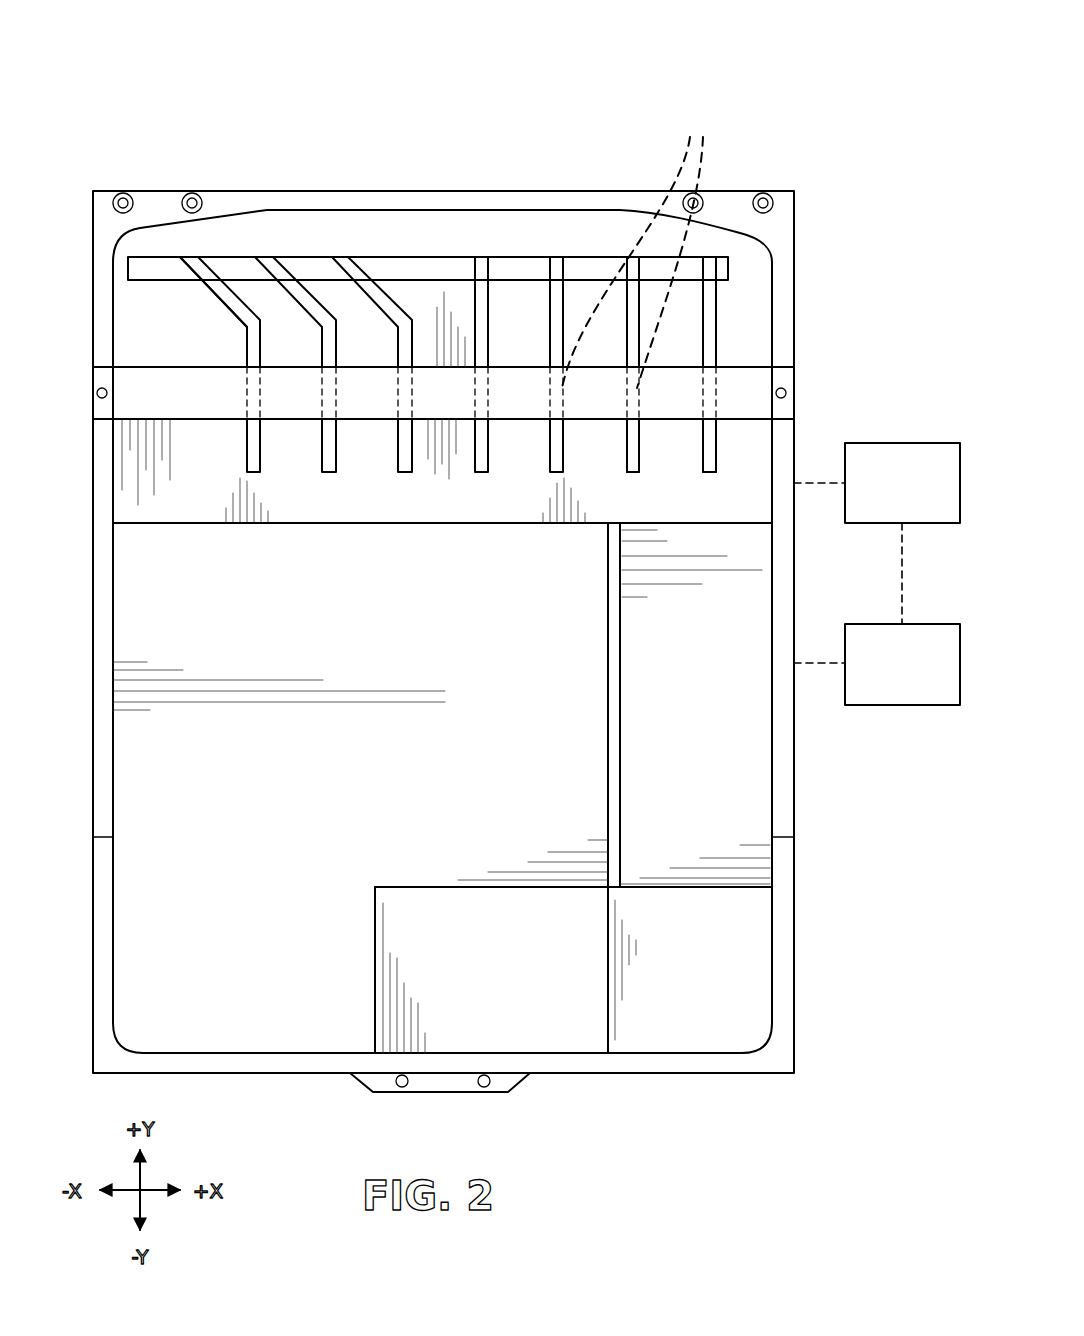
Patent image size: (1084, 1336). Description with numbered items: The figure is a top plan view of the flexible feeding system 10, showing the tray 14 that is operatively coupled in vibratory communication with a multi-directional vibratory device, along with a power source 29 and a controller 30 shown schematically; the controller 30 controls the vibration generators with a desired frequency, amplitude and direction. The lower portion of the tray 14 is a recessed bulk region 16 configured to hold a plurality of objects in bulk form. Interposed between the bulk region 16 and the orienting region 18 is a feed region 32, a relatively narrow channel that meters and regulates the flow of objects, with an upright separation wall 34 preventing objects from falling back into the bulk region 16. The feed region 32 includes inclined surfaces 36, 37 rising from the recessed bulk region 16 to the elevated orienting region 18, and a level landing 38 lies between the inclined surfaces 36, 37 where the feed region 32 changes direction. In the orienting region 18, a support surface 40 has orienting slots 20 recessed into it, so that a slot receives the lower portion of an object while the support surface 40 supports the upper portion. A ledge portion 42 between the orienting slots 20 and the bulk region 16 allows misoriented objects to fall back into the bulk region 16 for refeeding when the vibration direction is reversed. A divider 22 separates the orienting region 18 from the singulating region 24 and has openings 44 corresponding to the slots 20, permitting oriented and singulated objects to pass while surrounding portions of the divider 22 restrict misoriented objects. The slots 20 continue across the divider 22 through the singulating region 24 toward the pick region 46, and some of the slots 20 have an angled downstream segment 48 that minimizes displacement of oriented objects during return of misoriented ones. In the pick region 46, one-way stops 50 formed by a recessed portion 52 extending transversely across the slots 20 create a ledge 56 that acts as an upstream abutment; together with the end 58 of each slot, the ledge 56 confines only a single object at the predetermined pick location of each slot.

The flexible feeding system 10 is at (113, 60).
The tray 14 is at (104, 176).
The bulk region 16 is at (200, 768).
The orienting region 18 is at (338, 504).
The orienting slots 20 is at (633, 445).
The divider 22 is at (182, 392).
The singulating region 24 is at (195, 333).
The power source 29 is at (877, 614).
The controller 30 is at (877, 483).
The feed region 32 is at (686, 858).
The separation wall 34 is at (615, 808).
The inclined surface 36 is at (527, 1022).
The inclined surface 37 is at (735, 748).
The level landing 38 is at (730, 993).
The support surface 40 is at (677, 458).
The ledge portion 42 is at (175, 523).
The openings 44 is at (637, 250).
The pick region 46 is at (580, 250).
The downstream segment 48 is at (307, 303).
The one-way stops 50 is at (466, 250).
The recessed portion 52 is at (688, 268).
The ledge 56 is at (490, 278).
The end of the slot 58 is at (481, 250).